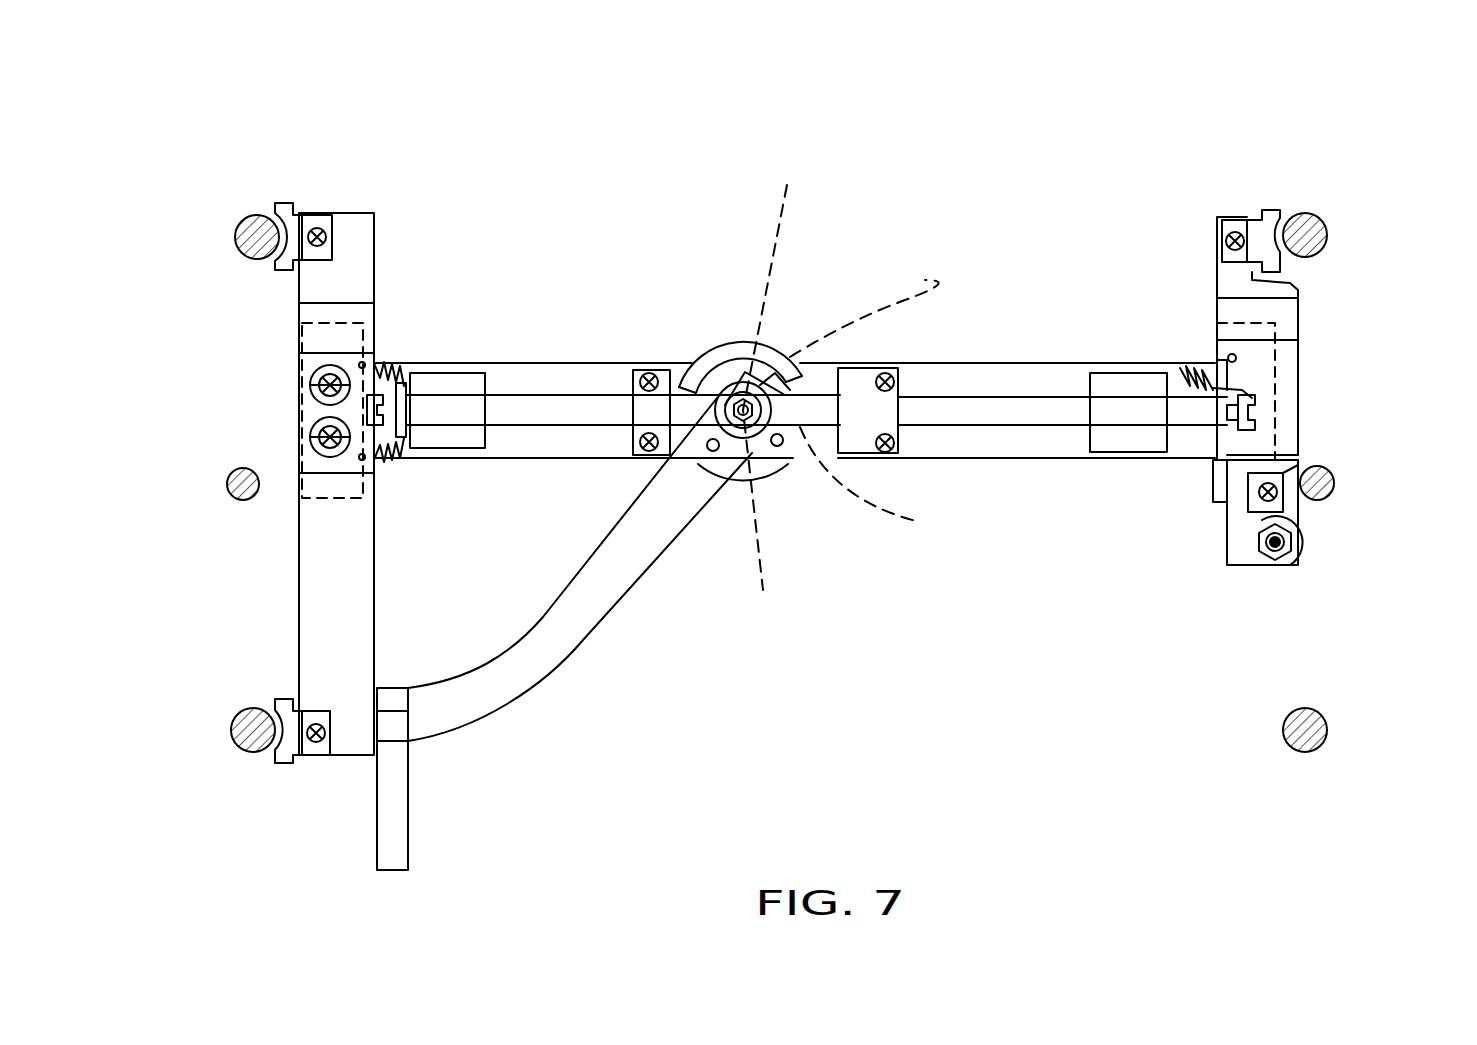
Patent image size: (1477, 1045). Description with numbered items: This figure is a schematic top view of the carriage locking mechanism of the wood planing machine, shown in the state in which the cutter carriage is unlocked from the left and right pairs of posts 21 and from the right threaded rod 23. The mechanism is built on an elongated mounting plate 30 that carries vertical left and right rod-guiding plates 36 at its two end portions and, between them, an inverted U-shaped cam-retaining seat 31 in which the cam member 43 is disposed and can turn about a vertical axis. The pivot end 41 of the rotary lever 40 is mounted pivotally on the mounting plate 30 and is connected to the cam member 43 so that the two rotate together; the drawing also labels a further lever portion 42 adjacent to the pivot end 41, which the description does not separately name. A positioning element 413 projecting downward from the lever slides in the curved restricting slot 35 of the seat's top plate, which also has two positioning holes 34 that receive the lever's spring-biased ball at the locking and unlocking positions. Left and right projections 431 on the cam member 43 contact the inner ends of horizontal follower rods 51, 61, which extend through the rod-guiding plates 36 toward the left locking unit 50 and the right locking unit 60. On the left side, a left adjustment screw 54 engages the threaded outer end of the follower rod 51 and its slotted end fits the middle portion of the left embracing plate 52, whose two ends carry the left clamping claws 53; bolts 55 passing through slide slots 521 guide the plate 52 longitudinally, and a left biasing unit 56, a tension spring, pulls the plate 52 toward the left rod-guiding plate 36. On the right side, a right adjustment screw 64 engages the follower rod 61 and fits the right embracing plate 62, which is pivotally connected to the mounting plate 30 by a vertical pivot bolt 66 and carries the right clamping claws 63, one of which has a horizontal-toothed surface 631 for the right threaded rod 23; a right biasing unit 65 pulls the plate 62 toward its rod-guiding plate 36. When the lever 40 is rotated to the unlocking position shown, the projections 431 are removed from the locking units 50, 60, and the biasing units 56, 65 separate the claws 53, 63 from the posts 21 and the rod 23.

The posts 21 is at (238, 230).
The threaded rods 23 is at (228, 497).
The mounting plate 30 is at (870, 457).
The cam-retaining seat 31 is at (712, 360).
The positioning holes 34 is at (780, 446).
The restricting slot 35 is at (695, 365).
The rod-guiding plates 36 is at (427, 413).
The rotary lever 40 is at (585, 647).
The pivot end 41 is at (790, 395).
The positioning element 413 is at (886, 302).
The pawl 42 is at (768, 357).
The cam member 43 is at (883, 487).
The projections 431 is at (780, 382).
The left locking unit 50 is at (377, 337).
The follower rod 51 is at (555, 405).
The left embracing plate 52 is at (307, 360).
The slide slots 521 is at (308, 386).
The left clamping claws 53 is at (284, 203).
The left adjustment screw 54 is at (367, 405).
The bolts 55 is at (308, 437).
The left biasing unit 56 is at (366, 366).
The right locking unit 60 is at (1212, 270).
The follower rod 61 is at (1047, 402).
The right embracing plate 62 is at (1297, 360).
The right clamping claws 63 is at (1273, 212).
The horizontal-toothed surface 631 is at (1297, 520).
The right adjustment screw 64 is at (1257, 402).
The right biasing unit 65 is at (1192, 365).
The pivot bolt 66 is at (1275, 553).